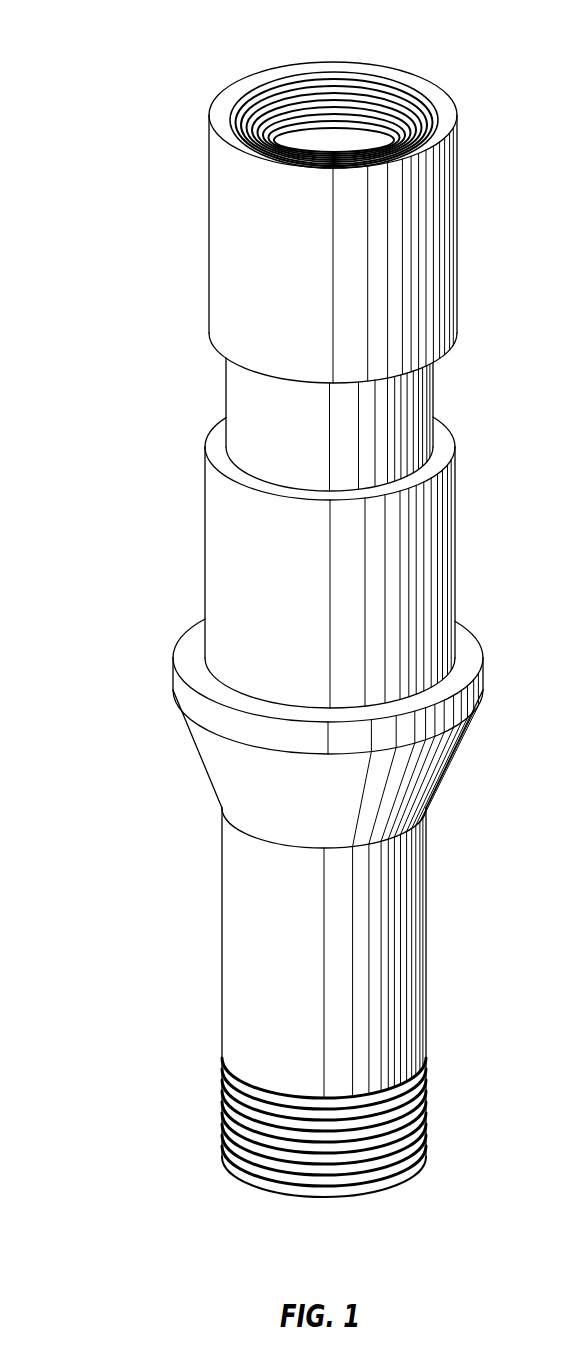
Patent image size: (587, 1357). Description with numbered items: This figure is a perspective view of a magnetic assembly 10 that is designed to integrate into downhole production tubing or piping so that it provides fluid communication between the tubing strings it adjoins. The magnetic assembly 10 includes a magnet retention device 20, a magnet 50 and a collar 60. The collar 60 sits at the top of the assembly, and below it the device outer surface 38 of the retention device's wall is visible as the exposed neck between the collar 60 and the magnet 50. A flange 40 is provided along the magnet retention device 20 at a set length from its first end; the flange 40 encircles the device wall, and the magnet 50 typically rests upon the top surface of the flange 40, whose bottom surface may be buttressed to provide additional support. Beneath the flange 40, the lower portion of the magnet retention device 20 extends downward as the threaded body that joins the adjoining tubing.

The magnetic assembly 10 is at (110, 48).
The collar 60 is at (222, 247).
The device outer surface 38 is at (232, 386).
The magnet 50 is at (213, 537).
The flange 40 is at (184, 693).
The magnet retention device 20 is at (236, 948).